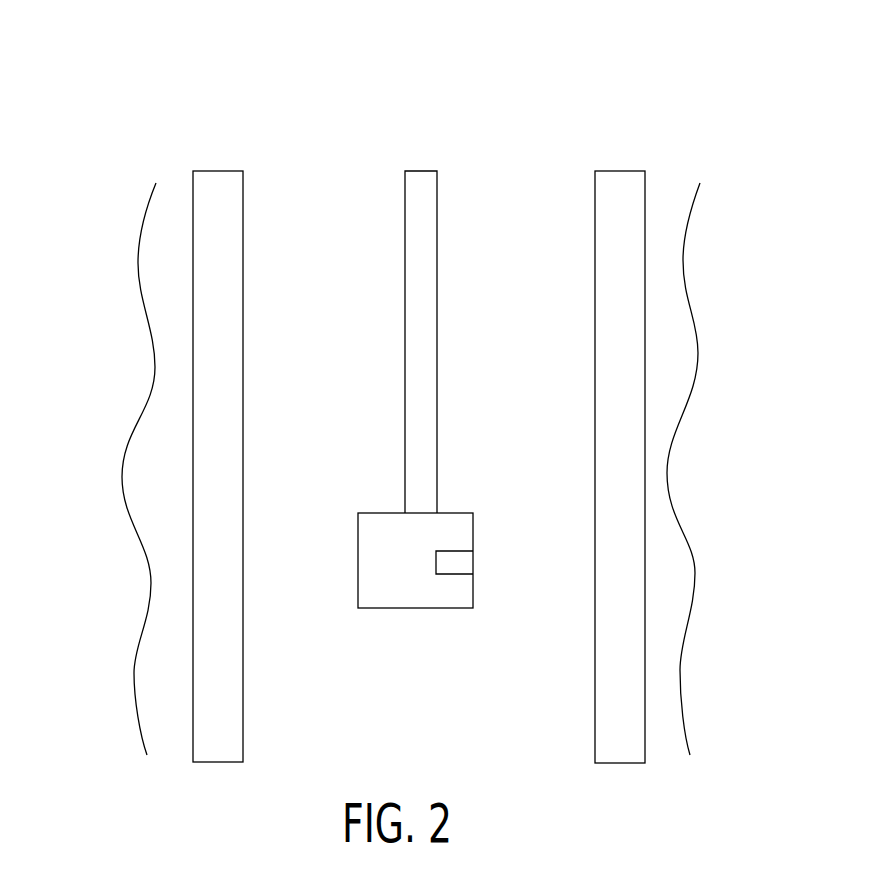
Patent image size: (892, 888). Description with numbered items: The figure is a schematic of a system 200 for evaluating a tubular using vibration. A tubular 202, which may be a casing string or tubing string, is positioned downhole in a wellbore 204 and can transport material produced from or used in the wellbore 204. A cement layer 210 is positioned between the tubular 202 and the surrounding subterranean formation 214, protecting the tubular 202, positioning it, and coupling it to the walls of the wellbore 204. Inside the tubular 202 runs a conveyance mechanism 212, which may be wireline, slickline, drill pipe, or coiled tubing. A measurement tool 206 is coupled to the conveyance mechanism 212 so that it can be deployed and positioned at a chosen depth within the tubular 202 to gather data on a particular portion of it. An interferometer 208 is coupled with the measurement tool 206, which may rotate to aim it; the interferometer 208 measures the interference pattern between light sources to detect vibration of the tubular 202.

The system 200 is at (110, 85).
The tubular 202 is at (618, 171).
The wellbore 204 is at (692, 317).
The measurement tool 206 is at (375, 558).
The interferometer 208 is at (462, 563).
The cement layer 210 is at (667, 685).
The conveyance mechanism 212 is at (418, 171).
The subterranean formation 214 is at (746, 481).